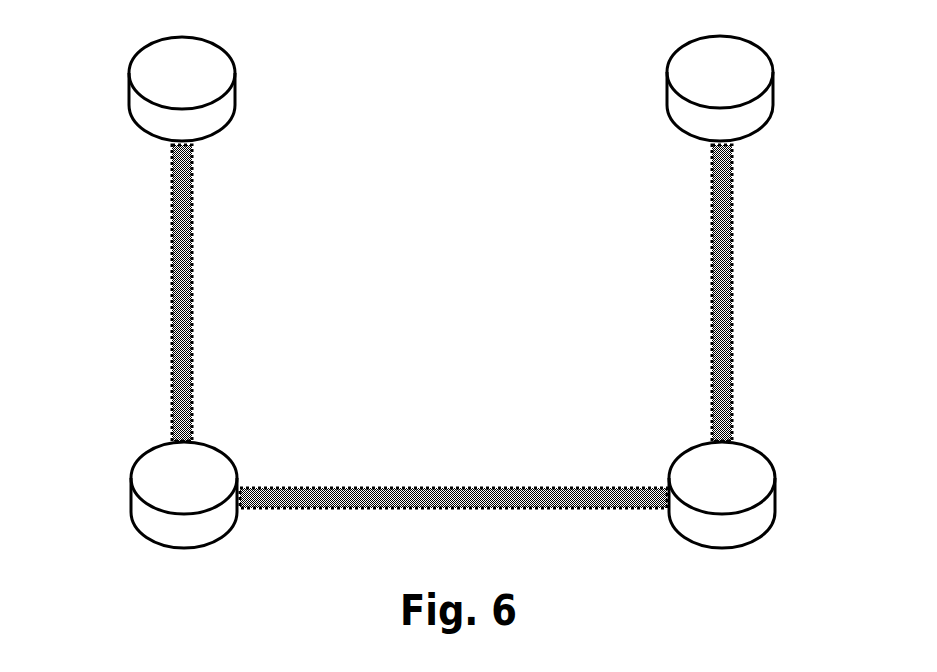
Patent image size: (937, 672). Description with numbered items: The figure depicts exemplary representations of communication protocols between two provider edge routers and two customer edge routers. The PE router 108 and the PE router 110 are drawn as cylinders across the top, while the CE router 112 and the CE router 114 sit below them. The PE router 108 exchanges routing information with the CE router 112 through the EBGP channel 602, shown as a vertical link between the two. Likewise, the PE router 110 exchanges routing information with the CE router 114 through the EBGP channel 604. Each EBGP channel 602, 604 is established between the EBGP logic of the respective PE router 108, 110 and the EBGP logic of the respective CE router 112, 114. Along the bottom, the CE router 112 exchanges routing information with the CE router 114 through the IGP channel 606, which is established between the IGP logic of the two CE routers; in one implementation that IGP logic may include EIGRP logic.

The PE router 108 is at (235, 91).
The PE router 110 is at (667, 90).
The CE router 112 is at (131, 496).
The CE router 114 is at (775, 498).
The EBGP channel 602 is at (192, 292).
The EBGP channel 604 is at (712, 292).
The IGP channel 606 is at (453, 488).